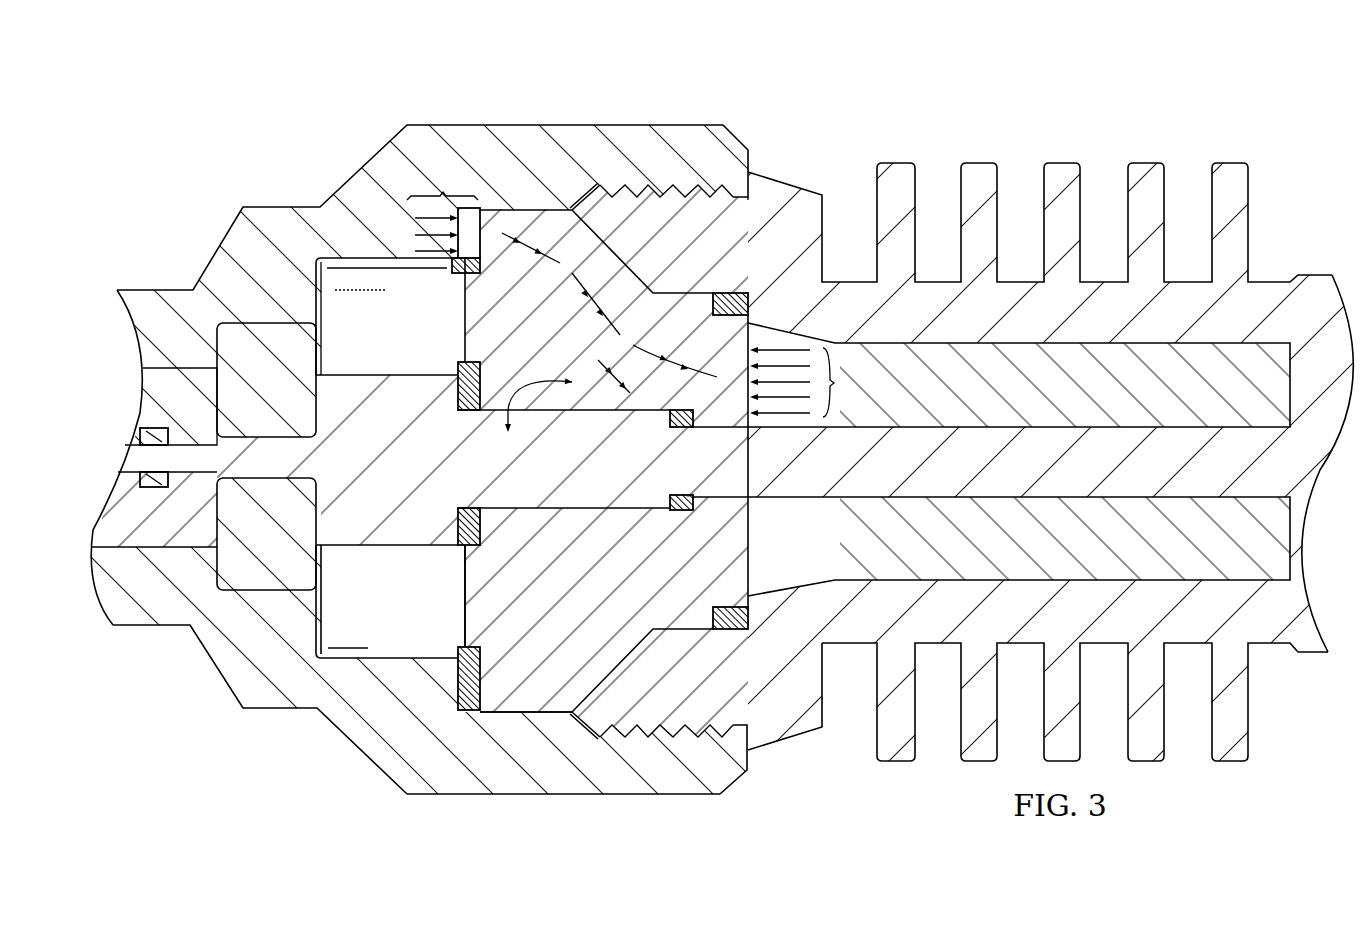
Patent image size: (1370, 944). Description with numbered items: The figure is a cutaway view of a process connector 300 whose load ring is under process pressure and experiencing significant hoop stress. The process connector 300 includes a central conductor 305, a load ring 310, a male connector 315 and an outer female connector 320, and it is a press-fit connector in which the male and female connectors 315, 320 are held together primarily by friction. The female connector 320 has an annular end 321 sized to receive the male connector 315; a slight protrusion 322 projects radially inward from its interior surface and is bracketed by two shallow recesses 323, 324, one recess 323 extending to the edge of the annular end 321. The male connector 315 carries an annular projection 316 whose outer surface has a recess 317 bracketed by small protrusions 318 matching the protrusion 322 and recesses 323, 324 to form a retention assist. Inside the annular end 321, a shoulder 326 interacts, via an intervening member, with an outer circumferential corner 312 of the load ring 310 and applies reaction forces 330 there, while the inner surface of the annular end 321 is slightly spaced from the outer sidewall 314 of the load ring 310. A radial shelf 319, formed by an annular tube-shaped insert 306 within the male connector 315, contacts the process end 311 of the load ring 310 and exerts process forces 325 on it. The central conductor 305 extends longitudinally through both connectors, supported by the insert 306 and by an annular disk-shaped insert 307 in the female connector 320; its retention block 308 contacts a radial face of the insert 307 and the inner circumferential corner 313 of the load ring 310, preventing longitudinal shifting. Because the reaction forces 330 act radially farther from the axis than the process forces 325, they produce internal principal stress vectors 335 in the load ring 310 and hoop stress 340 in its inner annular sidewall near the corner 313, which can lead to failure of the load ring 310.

The process connector 300 is at (230, 121).
The central conductor 305 is at (366, 471).
The annular tube-shaped insert 306 is at (1038, 396).
The annular disk-shaped insert 307 is at (308, 353).
The retention block 308 is at (428, 372).
The load ring 310 is at (468, 313).
The process end 311 is at (748, 562).
The outer circumferential corner 312 is at (452, 652).
The inner circumferential corner 313 is at (452, 553).
The outer sidewall 314 is at (545, 715).
The male connector 315 is at (790, 737).
The annular projection 316 is at (790, 186).
The recess 317 is at (617, 188).
The small protrusions 318 is at (593, 188).
The radial shelf 319 is at (748, 530).
The outer female connector 320 is at (270, 712).
The annular end 321 is at (450, 796).
The protrusion 322 is at (662, 730).
The recess 323 is at (740, 728).
The recess 324 is at (583, 735).
The process forces 325 is at (814, 379).
The shoulder 326 is at (457, 685).
The reaction forces 330 is at (443, 203).
The principal stress vectors 335 is at (573, 273).
The hoop stress 340 is at (535, 388).